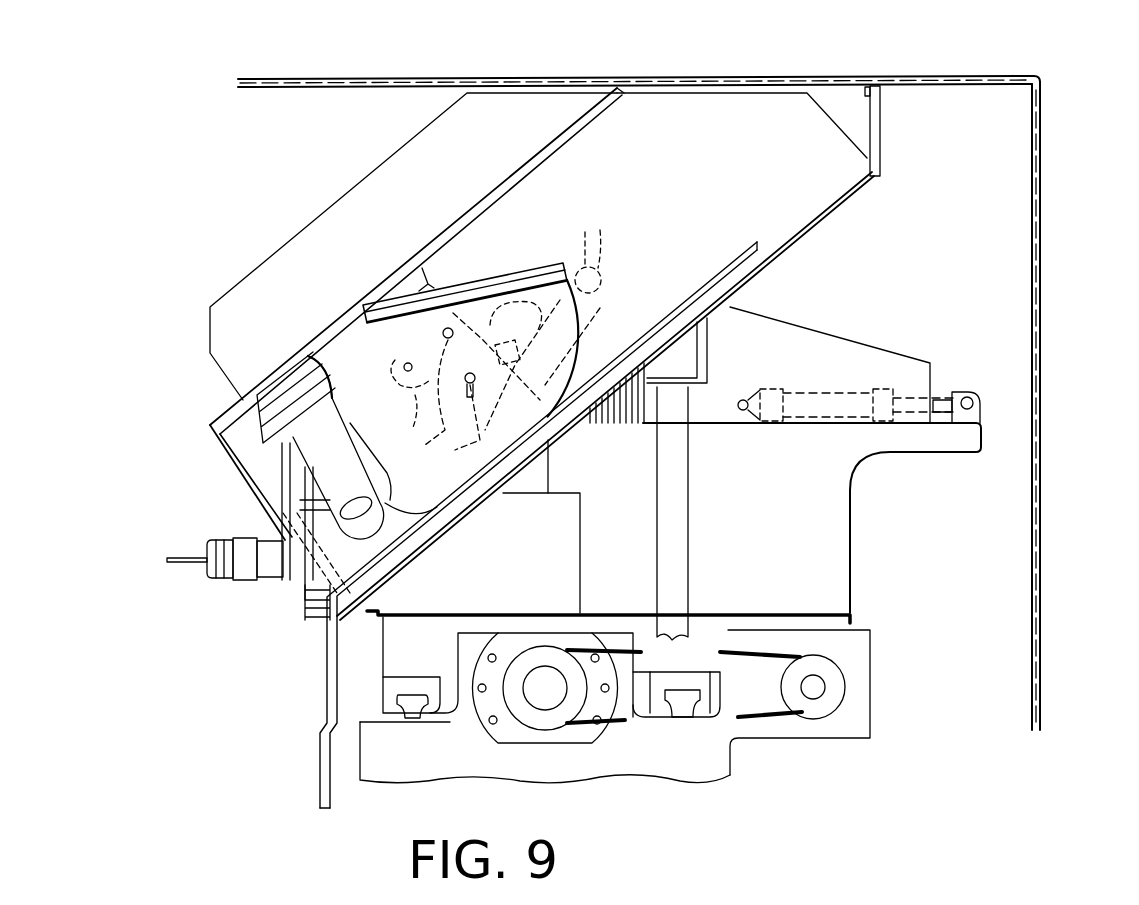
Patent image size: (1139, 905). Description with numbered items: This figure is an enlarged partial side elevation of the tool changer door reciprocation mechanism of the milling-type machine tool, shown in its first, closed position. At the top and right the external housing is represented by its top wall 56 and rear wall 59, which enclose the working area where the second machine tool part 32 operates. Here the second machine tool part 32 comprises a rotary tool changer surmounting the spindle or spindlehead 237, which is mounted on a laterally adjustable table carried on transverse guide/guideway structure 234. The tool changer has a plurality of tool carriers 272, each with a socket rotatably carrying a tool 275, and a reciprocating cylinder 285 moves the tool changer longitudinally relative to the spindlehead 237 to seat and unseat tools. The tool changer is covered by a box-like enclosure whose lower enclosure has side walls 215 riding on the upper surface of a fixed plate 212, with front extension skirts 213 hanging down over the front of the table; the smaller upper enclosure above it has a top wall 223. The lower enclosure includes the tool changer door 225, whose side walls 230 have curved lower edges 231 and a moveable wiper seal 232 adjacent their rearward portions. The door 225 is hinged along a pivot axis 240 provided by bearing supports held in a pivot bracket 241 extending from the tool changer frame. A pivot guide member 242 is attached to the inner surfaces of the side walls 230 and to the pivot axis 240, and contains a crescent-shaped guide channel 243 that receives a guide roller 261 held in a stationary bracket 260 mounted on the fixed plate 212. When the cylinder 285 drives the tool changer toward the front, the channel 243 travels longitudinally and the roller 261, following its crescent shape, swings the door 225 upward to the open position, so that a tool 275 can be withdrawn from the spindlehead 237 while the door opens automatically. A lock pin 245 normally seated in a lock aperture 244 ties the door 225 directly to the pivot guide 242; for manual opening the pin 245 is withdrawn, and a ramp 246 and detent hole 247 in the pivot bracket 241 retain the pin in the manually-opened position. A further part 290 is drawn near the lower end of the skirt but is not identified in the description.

The top wall 56 is at (933, 73).
The rear wall 59 is at (1040, 312).
The side walls 215 is at (694, 147).
The top wall 223 is at (330, 210).
The tool changer door 225 is at (218, 469).
The fixed plate 212 is at (757, 273).
The front extension skirts 213 is at (323, 670).
The lower plate end 290 is at (320, 760).
The stationary bracket 260 is at (582, 427).
The second machine tool part 32 is at (597, 527).
The transverse guide/guideway structure 234 is at (409, 683).
The lock aperture 244 is at (556, 475).
The reciprocating cylinder 285 is at (841, 390).
The moveable wiper seal 232 is at (477, 288).
The curved lower edges 231 is at (585, 342).
The pivot bracket 241 is at (430, 262).
The pivot axis 240 is at (440, 337).
The detent hole 247 is at (392, 372).
The ramp 246 is at (412, 395).
The lock pin 245 is at (462, 392).
The guide roller 261 is at (492, 372).
The pivot guide member 242 is at (600, 230).
The crescent-shaped guide channel 243 is at (600, 306).
The side walls 230 is at (402, 489).
The spindle 237 is at (307, 627).
The tool 275 is at (233, 538).
The tool carriers 272 is at (283, 582).